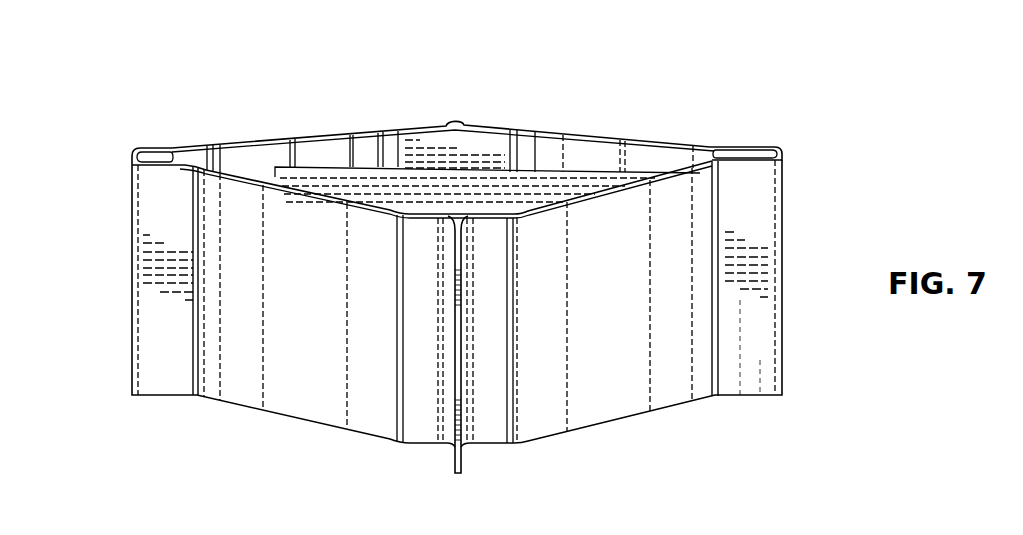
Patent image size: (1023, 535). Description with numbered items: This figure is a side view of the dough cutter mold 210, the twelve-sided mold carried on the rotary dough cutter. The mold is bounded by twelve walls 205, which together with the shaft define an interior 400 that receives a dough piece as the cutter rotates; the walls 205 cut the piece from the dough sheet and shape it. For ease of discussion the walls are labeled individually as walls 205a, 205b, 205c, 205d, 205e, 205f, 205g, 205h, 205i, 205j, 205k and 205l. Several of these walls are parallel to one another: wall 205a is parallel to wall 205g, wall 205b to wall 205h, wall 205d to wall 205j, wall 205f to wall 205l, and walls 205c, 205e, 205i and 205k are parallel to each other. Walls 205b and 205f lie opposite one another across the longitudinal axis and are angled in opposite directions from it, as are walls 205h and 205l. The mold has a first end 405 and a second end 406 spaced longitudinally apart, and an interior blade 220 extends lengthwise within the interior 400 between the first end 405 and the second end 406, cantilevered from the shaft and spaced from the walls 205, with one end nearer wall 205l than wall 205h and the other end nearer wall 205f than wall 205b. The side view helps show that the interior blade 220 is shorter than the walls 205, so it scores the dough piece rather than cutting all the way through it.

The dough cutter mold 210 is at (737, 76).
The walls 205 is at (753, 352).
The wall 205a is at (480, 137).
The wall 205b is at (610, 148).
The wall 205c is at (740, 152).
The wall 205d is at (783, 224).
The wall 205e is at (753, 380).
The wall 205f is at (622, 400).
The wall 205g is at (427, 390).
The wall 205h is at (297, 385).
The wall 205i is at (163, 372).
The wall 205j is at (133, 278).
The wall 205k is at (173, 151).
The wall 205l is at (333, 155).
The interior blade 220 is at (538, 183).
The interior 400 is at (255, 162).
The first end 405 is at (134, 148).
The second end 406 is at (784, 150).